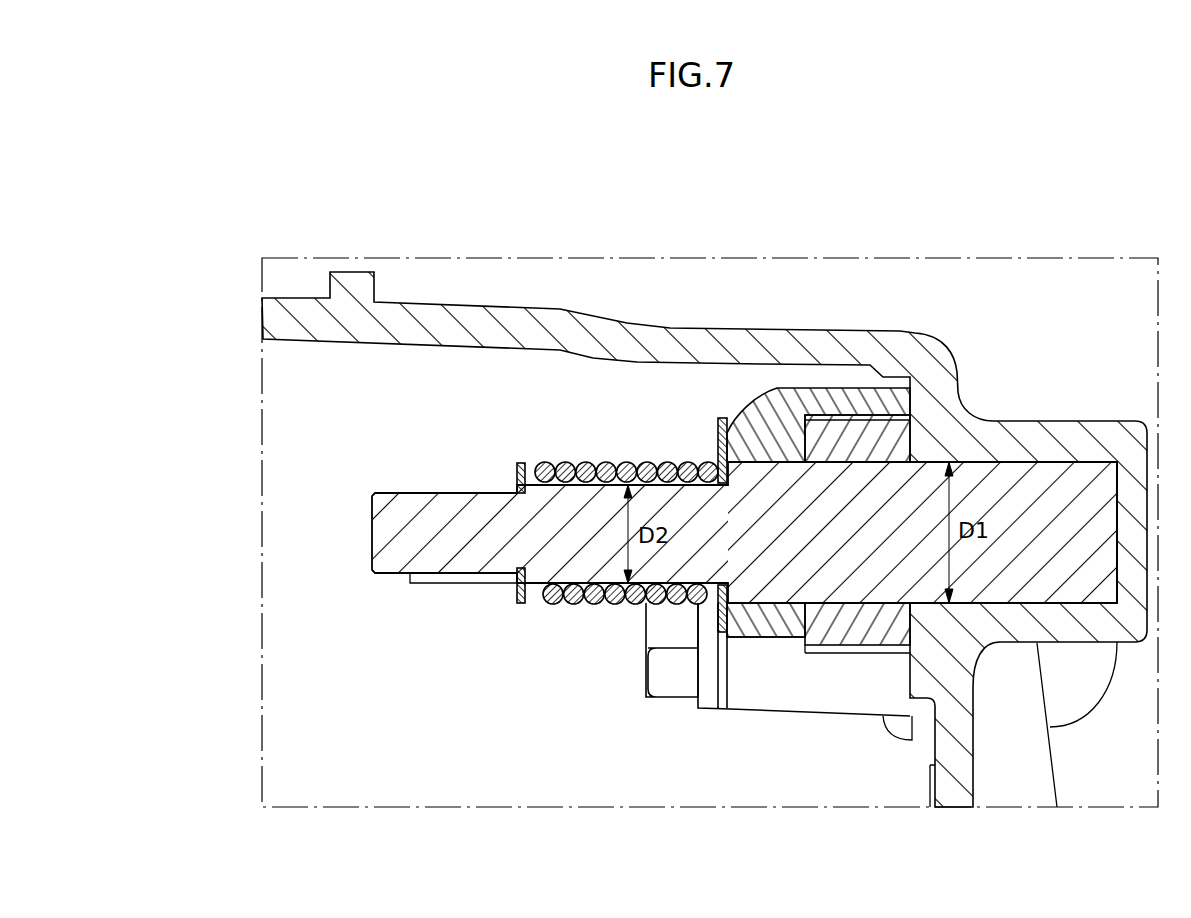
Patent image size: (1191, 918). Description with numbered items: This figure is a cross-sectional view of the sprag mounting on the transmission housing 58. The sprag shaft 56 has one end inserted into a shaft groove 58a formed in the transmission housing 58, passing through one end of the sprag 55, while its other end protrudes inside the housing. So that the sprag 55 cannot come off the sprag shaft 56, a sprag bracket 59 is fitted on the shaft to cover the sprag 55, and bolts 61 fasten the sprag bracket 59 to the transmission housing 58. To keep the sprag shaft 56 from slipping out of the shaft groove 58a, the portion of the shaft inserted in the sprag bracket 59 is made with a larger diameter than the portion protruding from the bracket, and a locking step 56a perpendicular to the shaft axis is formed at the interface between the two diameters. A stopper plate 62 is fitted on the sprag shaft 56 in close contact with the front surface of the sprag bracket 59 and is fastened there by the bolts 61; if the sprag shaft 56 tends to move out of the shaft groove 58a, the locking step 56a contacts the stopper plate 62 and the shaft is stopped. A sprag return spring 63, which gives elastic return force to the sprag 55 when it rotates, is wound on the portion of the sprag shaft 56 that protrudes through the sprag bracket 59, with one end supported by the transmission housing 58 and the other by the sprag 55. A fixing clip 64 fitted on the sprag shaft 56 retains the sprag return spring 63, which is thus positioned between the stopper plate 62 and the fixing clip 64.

The sprag 55 is at (853, 437).
The sprag shaft 56 is at (385, 533).
The locking step 56a is at (707, 605).
The transmission housing 58 is at (927, 360).
The shaft groove 58a is at (1062, 483).
The sprag bracket 59 is at (775, 400).
The bolt 61 is at (662, 630).
The stopper plate 62 is at (713, 433).
The sprag return spring 63 is at (585, 465).
The fixing clip 64 is at (513, 472).